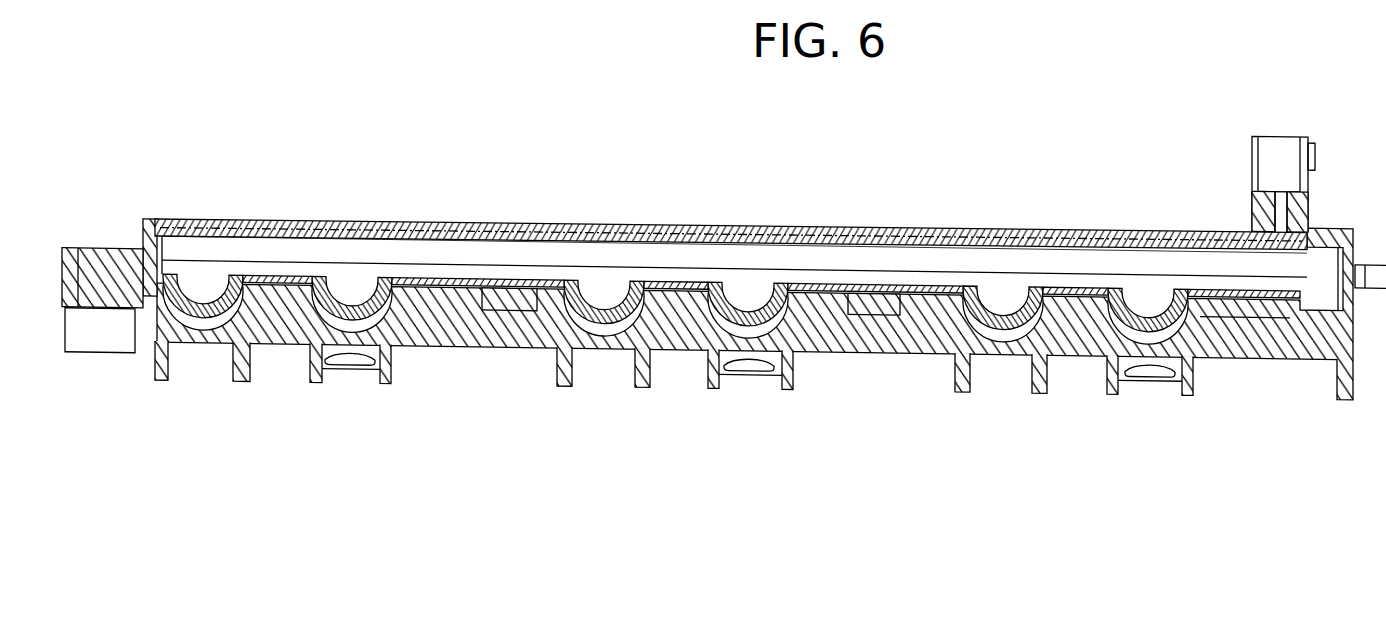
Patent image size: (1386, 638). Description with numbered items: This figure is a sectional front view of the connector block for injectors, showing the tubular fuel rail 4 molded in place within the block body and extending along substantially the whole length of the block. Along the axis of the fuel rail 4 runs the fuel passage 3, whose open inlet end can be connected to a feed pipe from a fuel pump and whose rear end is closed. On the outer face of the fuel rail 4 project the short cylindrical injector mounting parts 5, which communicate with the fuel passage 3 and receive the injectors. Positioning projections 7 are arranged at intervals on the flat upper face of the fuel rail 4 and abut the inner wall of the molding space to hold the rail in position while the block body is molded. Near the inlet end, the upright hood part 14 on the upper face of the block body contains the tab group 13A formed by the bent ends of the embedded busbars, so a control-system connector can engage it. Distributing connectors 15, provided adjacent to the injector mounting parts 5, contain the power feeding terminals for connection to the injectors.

The fuel passage 3 is at (776, 257).
The fuel rail 4 is at (724, 247).
The injector mounting parts 5 is at (203, 368).
The positioning projections 7 is at (318, 232).
The tab group 13A is at (1283, 222).
The hood part 14 is at (1252, 165).
The distributing connectors 15 is at (367, 370).